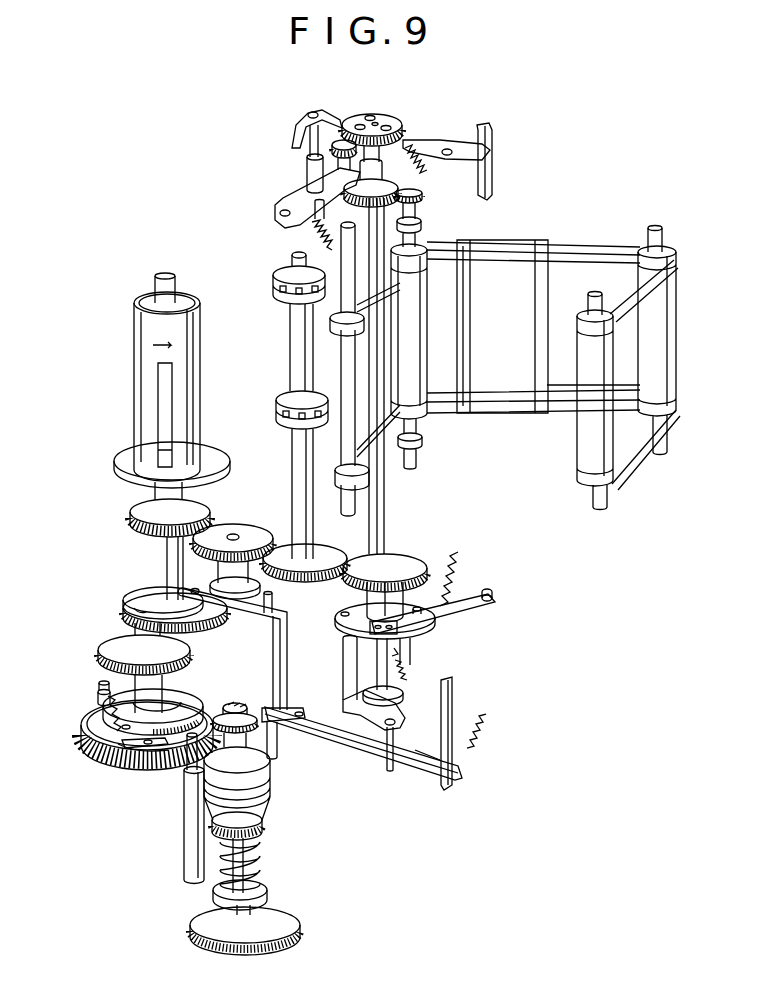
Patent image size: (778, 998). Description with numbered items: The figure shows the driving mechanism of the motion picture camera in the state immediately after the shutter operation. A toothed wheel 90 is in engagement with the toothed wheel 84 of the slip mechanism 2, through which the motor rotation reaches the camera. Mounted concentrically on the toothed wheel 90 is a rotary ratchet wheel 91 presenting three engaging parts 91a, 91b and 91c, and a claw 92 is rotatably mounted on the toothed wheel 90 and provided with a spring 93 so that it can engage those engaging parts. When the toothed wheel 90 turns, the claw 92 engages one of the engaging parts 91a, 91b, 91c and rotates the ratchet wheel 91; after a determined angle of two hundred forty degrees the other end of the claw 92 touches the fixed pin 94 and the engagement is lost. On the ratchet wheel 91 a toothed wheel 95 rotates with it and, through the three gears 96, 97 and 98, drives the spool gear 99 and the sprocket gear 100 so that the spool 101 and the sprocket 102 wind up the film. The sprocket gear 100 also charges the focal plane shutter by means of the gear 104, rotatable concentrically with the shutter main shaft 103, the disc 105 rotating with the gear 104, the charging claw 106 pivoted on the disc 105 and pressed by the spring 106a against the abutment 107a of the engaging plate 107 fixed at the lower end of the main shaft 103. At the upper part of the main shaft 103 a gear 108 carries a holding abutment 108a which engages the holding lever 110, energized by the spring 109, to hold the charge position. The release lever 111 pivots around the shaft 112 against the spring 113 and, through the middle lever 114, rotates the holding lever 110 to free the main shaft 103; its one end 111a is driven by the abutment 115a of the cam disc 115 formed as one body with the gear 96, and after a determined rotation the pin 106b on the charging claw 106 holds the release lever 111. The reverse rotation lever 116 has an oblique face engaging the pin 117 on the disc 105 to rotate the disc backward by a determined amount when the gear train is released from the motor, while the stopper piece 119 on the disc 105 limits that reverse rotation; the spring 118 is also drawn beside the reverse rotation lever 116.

The slip mechanism 2 is at (272, 854).
The toothed wheel 84 is at (287, 702).
The toothed wheel 90 is at (108, 758).
The rotary ratchet wheel 91 is at (178, 692).
The engaging part 91a is at (116, 685).
The engaging part 91b is at (200, 702).
The engaging part 91c is at (130, 756).
The claw 92 is at (158, 754).
The spring 93 is at (88, 716).
The fixed pin 94 is at (186, 858).
The toothed wheel 95 is at (116, 641).
The gear 96 is at (158, 606).
The gear 97 is at (203, 580).
The gear 98 is at (236, 526).
The spool gear 99 is at (140, 512).
The sprocket gear 100 is at (332, 544).
The spool 101 is at (144, 375).
The sprocket 102 is at (294, 343).
The shutter main shaft 103 is at (386, 526).
The gear 104 is at (400, 564).
The disc 105 is at (362, 604).
The charging claw 106 is at (390, 768).
The spring 106a is at (404, 664).
The pin 106b is at (422, 758).
The engaging plate 107 is at (412, 692).
The abutment 107a is at (370, 732).
The gear 108 is at (395, 130).
The holding abutment 108a is at (407, 142).
The spring 109 is at (423, 175).
The holding lever 110 is at (490, 134).
The release lever 111 is at (425, 772).
The one end of release lever 111a is at (228, 612).
The shaft 112 is at (277, 739).
The spring 113 is at (484, 744).
The middle lever 114 is at (452, 710).
The cam disc 115 is at (135, 588).
The abutment 115a is at (132, 611).
The reverse rotation lever 116 is at (484, 600).
The pin 117 is at (442, 582).
The spring 118 is at (456, 578).
The stopper piece 119 is at (370, 628).